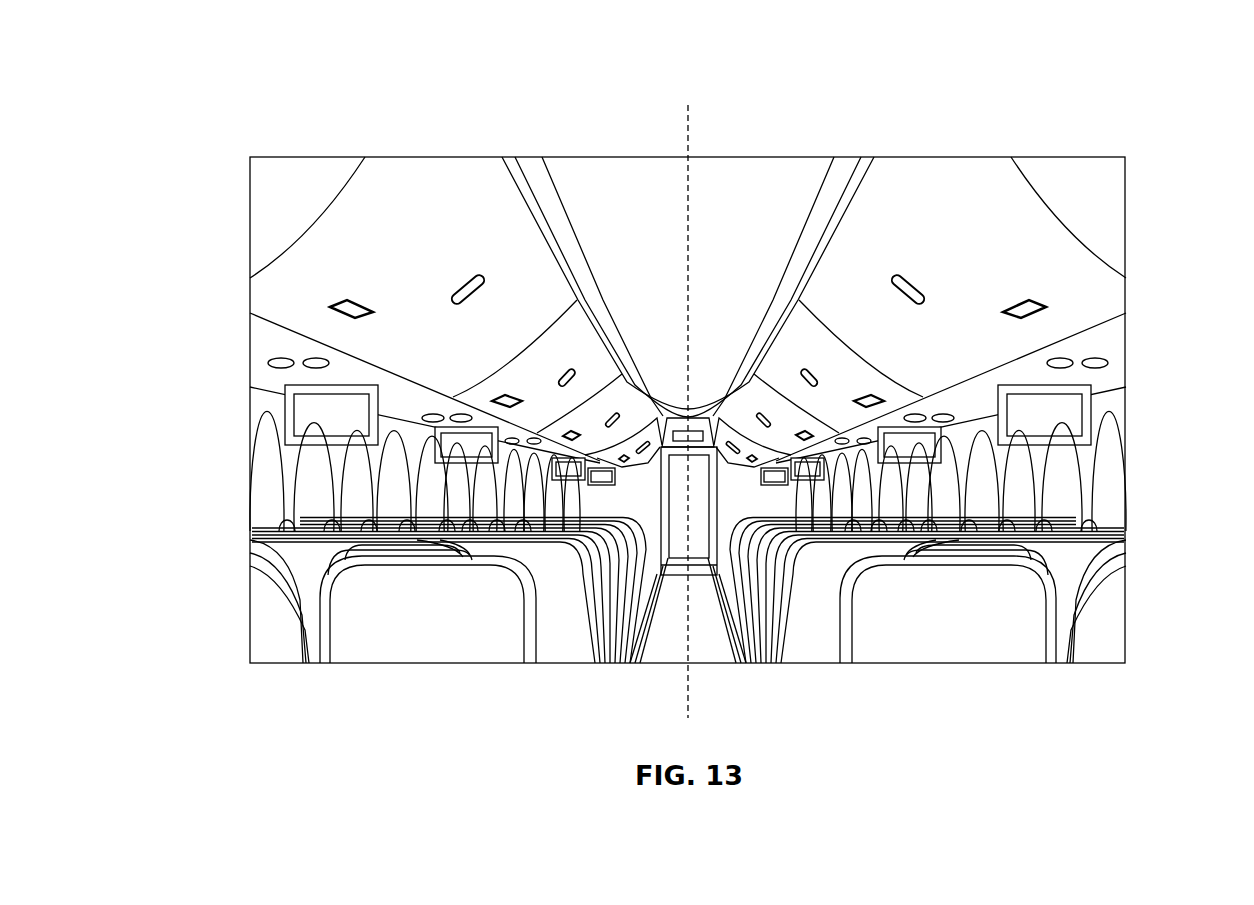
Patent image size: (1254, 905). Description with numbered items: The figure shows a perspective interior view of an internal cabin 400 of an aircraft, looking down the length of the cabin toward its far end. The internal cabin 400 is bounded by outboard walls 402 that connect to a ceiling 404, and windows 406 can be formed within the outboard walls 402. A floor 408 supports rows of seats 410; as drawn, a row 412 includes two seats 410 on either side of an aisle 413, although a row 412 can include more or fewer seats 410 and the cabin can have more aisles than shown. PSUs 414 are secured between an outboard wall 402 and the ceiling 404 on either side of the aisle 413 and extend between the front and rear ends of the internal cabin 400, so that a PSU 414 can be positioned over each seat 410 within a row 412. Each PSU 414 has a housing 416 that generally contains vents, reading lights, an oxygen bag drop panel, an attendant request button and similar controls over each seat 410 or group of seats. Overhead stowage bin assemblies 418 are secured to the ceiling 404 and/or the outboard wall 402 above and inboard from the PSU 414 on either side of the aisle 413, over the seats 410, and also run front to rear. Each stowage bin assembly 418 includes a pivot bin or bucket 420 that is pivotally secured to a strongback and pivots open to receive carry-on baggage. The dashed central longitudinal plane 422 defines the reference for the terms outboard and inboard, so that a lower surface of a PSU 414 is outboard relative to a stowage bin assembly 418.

The internal cabin 400 is at (196, 108).
The outboard wall 402 is at (270, 408).
The ceiling 404 is at (750, 156).
The window 406 is at (282, 520).
The floor 408 is at (677, 645).
The seat 410 is at (428, 652).
The row 412 is at (260, 620).
The aisle 413 is at (712, 645).
The PSU 414 is at (283, 370).
The housing 416 is at (258, 354).
The overhead stowage bin assembly 418 is at (360, 212).
The pivot bin or bucket 420 is at (428, 176).
The central longitudinal plane 422 is at (686, 128).